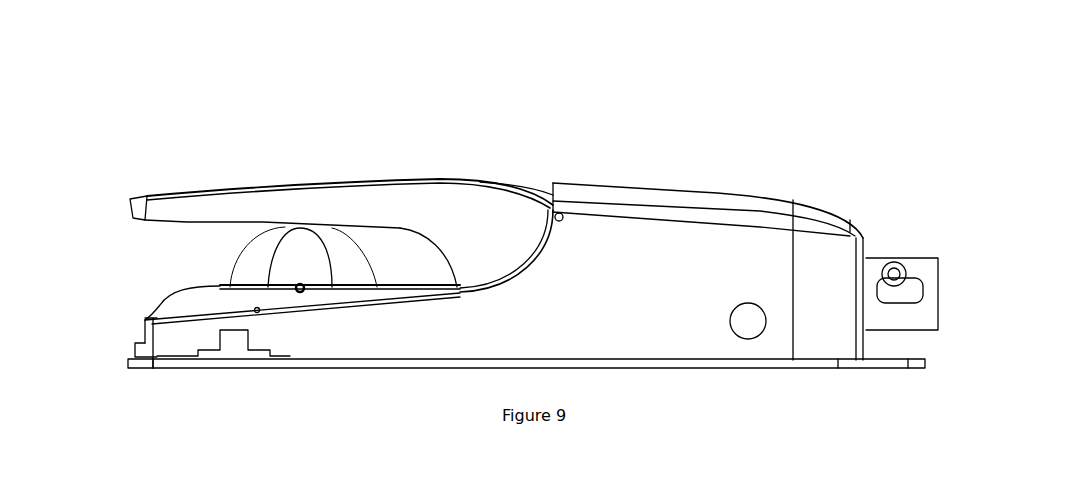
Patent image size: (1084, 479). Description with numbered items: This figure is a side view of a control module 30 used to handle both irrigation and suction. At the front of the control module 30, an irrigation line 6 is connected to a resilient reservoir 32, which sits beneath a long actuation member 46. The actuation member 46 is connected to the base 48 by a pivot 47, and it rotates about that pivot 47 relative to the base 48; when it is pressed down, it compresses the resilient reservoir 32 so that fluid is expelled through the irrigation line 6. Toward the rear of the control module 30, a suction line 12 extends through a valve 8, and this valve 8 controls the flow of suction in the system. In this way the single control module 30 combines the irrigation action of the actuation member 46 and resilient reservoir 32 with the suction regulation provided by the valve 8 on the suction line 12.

The control module 30 is at (558, 92).
The irrigation line 6 is at (300, 287).
The resilient reservoir 32 is at (300, 243).
The actuation member 46 is at (425, 198).
The pivot 47 is at (548, 197).
The base 48 is at (745, 242).
The valve 8 is at (928, 265).
The suction line 12 is at (893, 262).